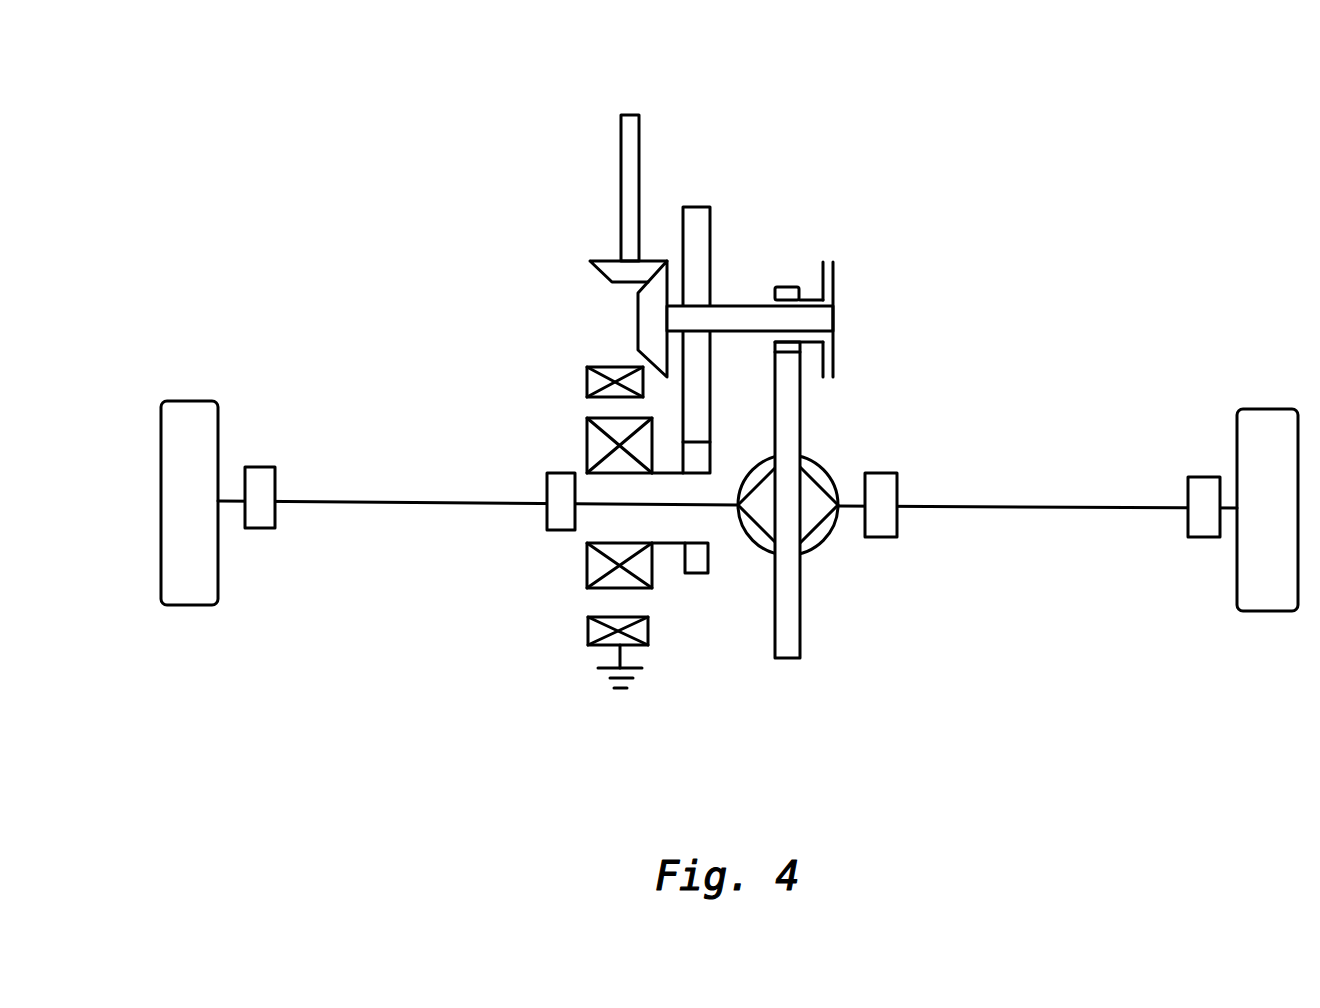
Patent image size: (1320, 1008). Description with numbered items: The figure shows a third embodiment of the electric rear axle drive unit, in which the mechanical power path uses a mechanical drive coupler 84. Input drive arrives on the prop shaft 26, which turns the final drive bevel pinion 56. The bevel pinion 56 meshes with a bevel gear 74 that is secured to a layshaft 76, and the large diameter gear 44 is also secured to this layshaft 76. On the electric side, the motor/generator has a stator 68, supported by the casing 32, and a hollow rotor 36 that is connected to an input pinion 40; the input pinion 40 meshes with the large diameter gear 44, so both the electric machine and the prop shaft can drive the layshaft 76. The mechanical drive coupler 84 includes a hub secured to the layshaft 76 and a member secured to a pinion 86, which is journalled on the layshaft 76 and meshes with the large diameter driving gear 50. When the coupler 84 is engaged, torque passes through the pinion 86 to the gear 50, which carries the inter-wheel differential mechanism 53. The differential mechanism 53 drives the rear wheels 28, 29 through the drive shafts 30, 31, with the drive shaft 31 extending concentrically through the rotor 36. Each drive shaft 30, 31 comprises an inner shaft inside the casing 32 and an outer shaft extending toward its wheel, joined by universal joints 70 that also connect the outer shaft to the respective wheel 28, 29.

The prop shaft 26 is at (620, 152).
The rear wheel 28 is at (1262, 611).
The rear wheel 29 is at (201, 605).
The drive shaft 30 is at (1005, 508).
The drive shaft 31 is at (378, 501).
The casing 32 is at (603, 677).
The hollow rotor 36 is at (587, 445).
The input pinion 40 is at (698, 575).
The large diameter gear 44 is at (698, 207).
The large diameter driving gear 50 is at (800, 660).
The inter-wheel differential mechanism 53 is at (820, 547).
The final drive bevel pinion 56 is at (590, 268).
The stator 68 is at (587, 630).
The universal joints 70 is at (267, 528).
The bevel gear 74 is at (636, 330).
The layshaft 76 is at (835, 318).
The mechanical drive coupler 84 is at (835, 272).
The pinion 86 is at (788, 287).